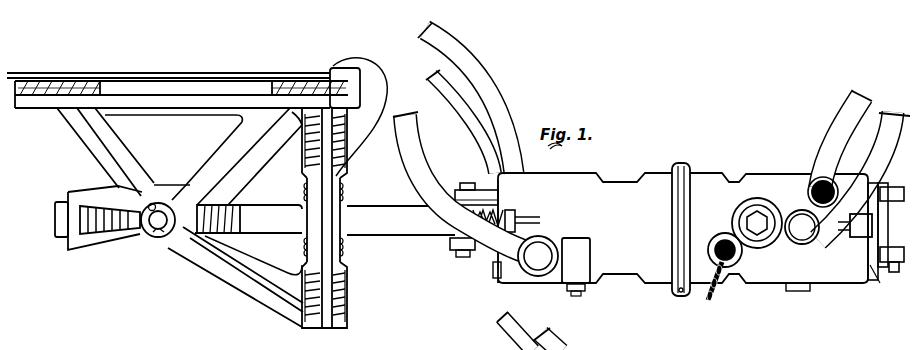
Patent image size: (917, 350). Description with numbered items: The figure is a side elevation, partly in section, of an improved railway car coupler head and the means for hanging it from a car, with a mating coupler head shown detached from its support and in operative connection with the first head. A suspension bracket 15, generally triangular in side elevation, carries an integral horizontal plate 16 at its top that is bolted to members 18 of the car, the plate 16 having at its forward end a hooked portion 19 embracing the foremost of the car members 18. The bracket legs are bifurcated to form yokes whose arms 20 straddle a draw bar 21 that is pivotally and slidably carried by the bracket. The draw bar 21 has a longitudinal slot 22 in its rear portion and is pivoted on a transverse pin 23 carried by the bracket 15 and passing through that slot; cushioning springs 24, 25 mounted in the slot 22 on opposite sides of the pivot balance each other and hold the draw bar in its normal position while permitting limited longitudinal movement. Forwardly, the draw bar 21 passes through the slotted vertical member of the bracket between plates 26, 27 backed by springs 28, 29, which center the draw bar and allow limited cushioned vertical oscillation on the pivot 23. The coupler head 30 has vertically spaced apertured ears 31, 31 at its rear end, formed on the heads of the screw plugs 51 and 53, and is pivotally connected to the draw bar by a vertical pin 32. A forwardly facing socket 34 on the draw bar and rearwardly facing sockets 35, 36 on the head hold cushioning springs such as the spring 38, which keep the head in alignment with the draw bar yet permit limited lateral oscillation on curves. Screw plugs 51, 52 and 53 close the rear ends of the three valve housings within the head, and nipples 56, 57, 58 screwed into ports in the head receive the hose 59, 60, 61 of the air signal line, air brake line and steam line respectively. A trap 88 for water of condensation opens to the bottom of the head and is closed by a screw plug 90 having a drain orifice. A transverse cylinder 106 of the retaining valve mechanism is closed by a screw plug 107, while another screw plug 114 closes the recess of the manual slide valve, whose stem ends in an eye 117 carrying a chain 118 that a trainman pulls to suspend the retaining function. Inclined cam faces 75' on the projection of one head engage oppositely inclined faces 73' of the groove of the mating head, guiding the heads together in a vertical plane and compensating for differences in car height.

The suspension bracket 15 is at (92, 146).
The horizontal plate 16 is at (160, 95).
The members of a railway car 18 is at (66, 95).
The hooked portion 19 is at (334, 66).
The arms 20 is at (179, 181).
The draw bar 21 is at (57, 208).
The longitudinal slot 22 is at (250, 238).
The transverse pin 23 is at (158, 229).
The cushioning spring 24 is at (236, 204).
The cushioning spring 25 is at (104, 236).
The plate 26 is at (346, 200).
The plate 27 is at (346, 241).
The spring 28 is at (346, 150).
The spring 29 is at (345, 287).
The coupler head 30 is at (722, 164).
The apertured ears 31 is at (460, 190).
The pin 32 is at (468, 183).
The lateral socket 34 is at (470, 214).
The socket 35 is at (852, 237).
The socket 36 is at (538, 224).
The cushioning spring 38 is at (515, 213).
The screw plug 51 is at (502, 196).
The screw plug 52 is at (878, 245).
The screw plug 53 is at (493, 274).
The nipple 56 is at (808, 195).
The nipple 57 is at (795, 242).
The nipple 58 is at (542, 277).
The hose 59 is at (472, 118).
The hose 60 is at (498, 73).
The hose 61 is at (512, 270).
The inclined faces 73' is at (696, 207).
The inclined cam faces 75' is at (689, 307).
The trap 88 is at (576, 260).
The screw plug 90 is at (582, 292).
The transverse cylinder 106 is at (754, 207).
The screw plug 107 is at (752, 222).
The screw plug 114 is at (722, 246).
The eye 117 is at (735, 256).
The chain 118 is at (716, 300).